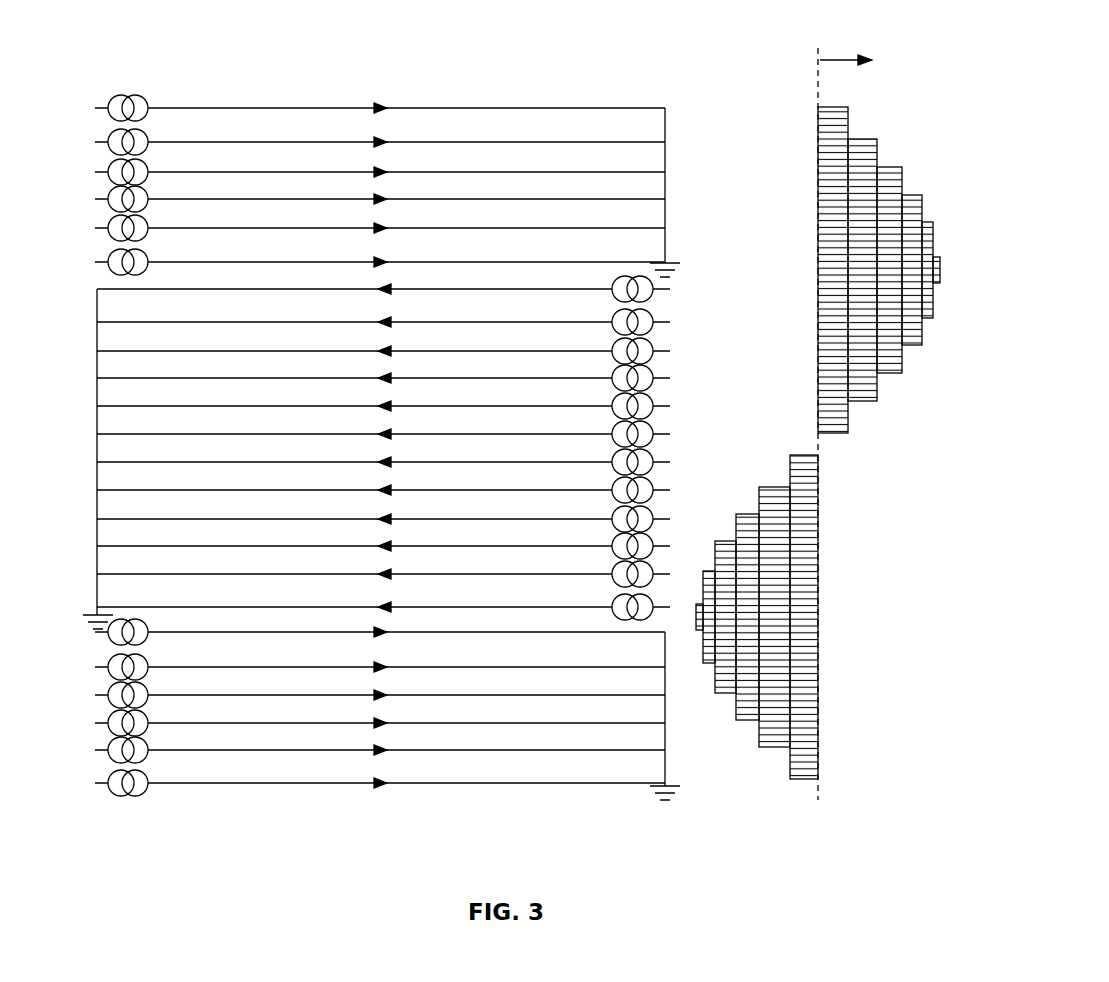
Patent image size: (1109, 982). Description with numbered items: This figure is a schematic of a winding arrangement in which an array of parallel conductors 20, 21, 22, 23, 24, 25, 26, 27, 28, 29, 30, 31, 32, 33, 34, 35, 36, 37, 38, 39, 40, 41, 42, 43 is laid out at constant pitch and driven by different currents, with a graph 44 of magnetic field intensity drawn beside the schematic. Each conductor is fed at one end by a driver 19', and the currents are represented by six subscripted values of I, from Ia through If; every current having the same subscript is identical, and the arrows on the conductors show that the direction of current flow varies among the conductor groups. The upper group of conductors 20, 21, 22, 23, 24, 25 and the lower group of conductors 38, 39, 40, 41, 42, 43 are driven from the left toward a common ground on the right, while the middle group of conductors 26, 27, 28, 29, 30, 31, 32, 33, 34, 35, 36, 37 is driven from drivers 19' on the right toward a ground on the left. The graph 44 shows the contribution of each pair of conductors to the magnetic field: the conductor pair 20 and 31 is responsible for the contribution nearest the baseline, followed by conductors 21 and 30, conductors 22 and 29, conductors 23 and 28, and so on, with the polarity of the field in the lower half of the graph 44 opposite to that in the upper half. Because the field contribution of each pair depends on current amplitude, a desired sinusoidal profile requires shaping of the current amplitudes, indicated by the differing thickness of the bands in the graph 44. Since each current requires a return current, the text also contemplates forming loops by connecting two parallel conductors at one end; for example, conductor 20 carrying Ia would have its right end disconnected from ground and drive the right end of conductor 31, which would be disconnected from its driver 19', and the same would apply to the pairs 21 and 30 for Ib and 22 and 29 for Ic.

The driver 19' is at (385, 451).
The conductor 20 is at (406, 95).
The conductor 21 is at (406, 129).
The conductor 22 is at (406, 159).
The conductor 23 is at (406, 186).
The conductor 24 is at (406, 215).
The conductor 25 is at (406, 249).
The conductor 26 is at (354, 277).
The conductor 27 is at (354, 310).
The conductor 28 is at (354, 339).
The conductor 29 is at (354, 366).
The conductor 30 is at (354, 394).
The conductor 31 is at (354, 422).
The conductor 32 is at (354, 450).
The conductor 33 is at (354, 478).
The conductor 34 is at (354, 507).
The conductor 35 is at (354, 534).
The conductor 36 is at (354, 562).
The conductor 37 is at (354, 595).
The conductor 38 is at (406, 619).
The conductor 39 is at (406, 654).
The conductor 40 is at (406, 682).
The conductor 41 is at (406, 710).
The conductor 42 is at (406, 737).
The conductor 43 is at (406, 770).
The magnetic field intensity graph 44 is at (818, 420).